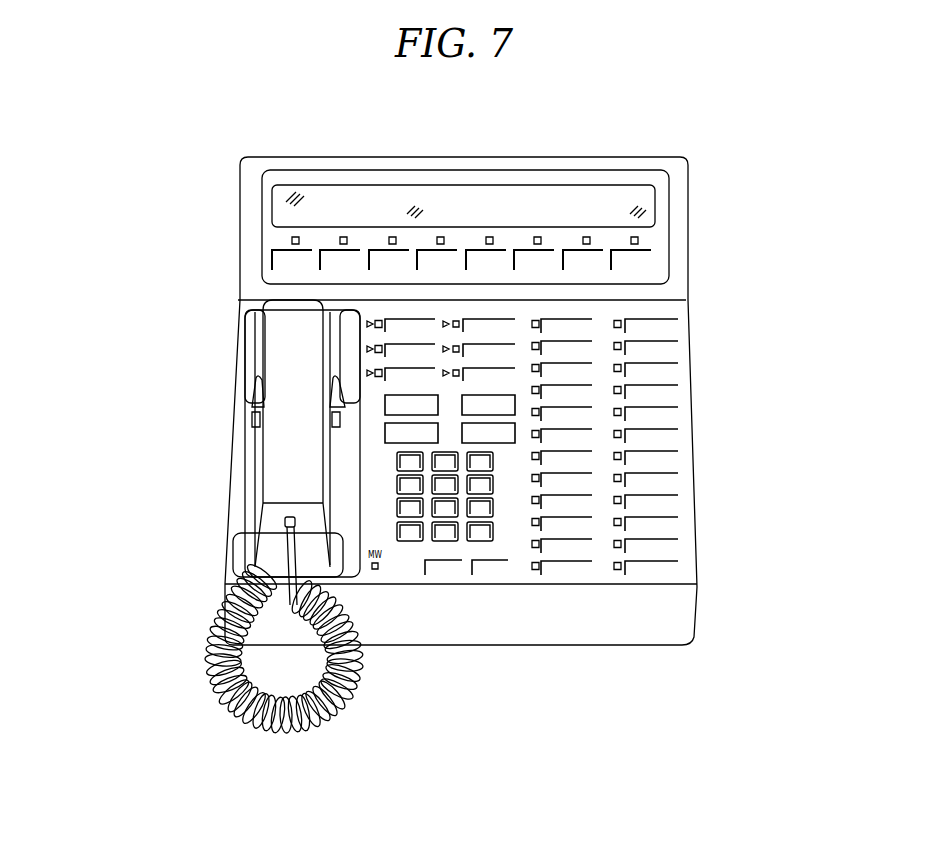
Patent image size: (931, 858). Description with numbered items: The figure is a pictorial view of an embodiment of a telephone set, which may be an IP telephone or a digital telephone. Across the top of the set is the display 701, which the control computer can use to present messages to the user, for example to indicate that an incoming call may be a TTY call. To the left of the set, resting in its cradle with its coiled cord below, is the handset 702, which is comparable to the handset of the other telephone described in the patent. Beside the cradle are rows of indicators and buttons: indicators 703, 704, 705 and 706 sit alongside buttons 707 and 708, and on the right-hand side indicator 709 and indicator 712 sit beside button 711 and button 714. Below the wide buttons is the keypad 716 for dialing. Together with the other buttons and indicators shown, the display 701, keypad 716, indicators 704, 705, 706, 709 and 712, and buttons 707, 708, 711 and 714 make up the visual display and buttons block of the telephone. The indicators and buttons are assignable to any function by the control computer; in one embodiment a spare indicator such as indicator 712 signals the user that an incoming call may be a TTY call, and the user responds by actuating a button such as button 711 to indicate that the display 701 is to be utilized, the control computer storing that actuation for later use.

The display 701 is at (510, 200).
The handset 702 is at (283, 485).
The indicator 703 is at (367, 326).
The indicator 704 is at (367, 323).
The indicator 705 is at (367, 349).
The indicator 706 is at (367, 373).
The button 707 is at (415, 325).
The button 708 is at (397, 352).
The indicator 709 is at (623, 323).
The button 711 is at (645, 329).
The indicator 712 is at (620, 347).
The button 714 is at (645, 345).
The keypad 716 is at (413, 545).